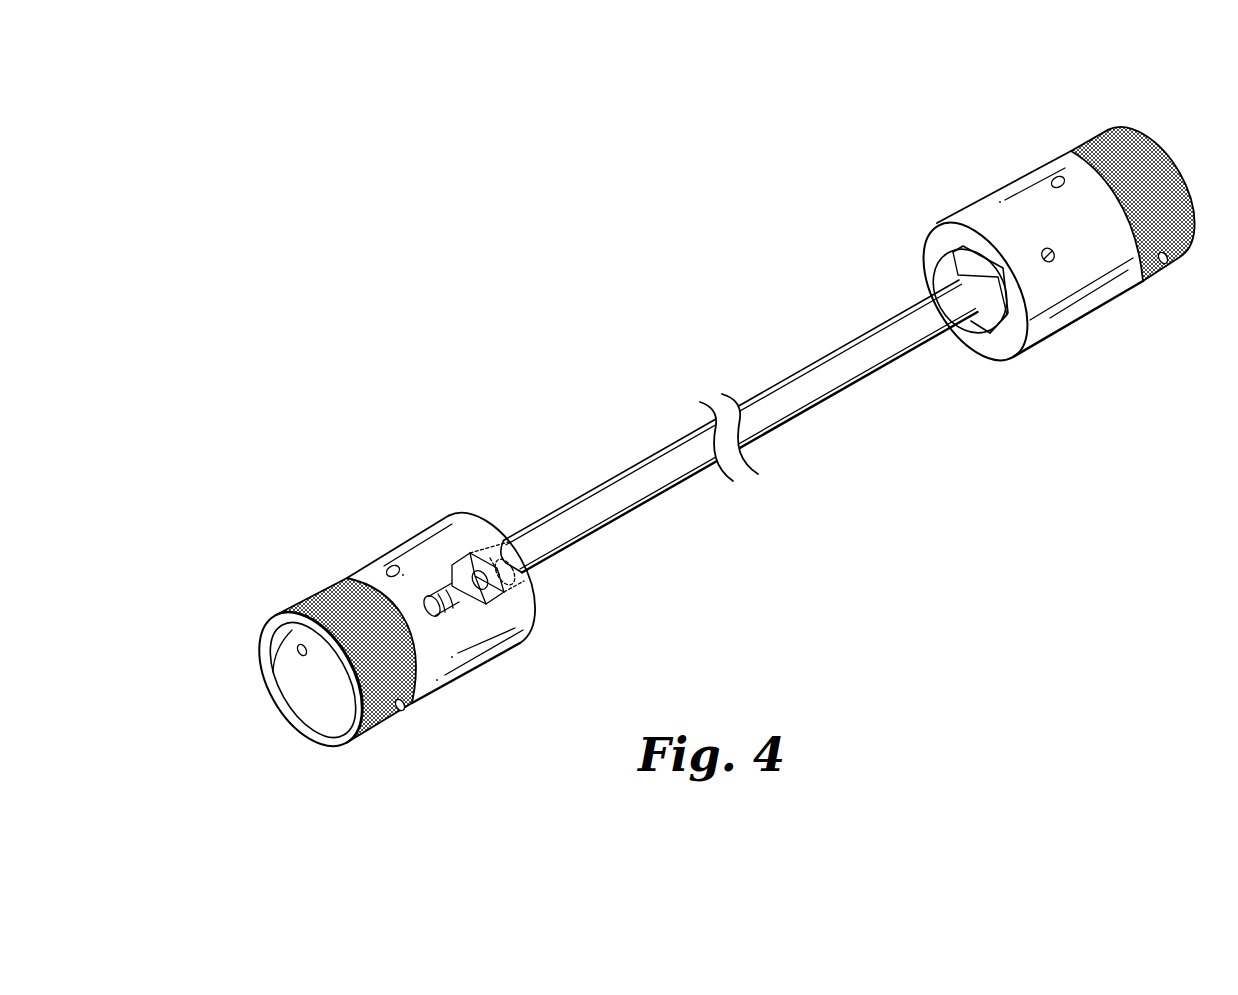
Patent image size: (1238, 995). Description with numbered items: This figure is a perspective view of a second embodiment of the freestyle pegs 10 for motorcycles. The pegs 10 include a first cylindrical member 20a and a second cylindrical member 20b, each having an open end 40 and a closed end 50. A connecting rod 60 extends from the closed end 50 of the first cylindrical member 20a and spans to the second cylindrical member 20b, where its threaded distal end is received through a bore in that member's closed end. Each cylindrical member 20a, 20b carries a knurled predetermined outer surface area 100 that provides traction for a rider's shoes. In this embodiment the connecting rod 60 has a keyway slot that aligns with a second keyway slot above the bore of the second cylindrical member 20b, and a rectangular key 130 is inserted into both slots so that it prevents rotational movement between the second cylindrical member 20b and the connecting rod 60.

The freestyle pegs 10 is at (714, 430).
The first cylindrical member 20a is at (1016, 176).
The second cylindrical member 20b is at (378, 555).
The open end 40 is at (263, 724).
The closed end 50 is at (1001, 375).
The connecting rod 60 is at (802, 422).
The knurled predetermined outer surface area 100 is at (390, 736).
The rectangular key 130 is at (507, 542).